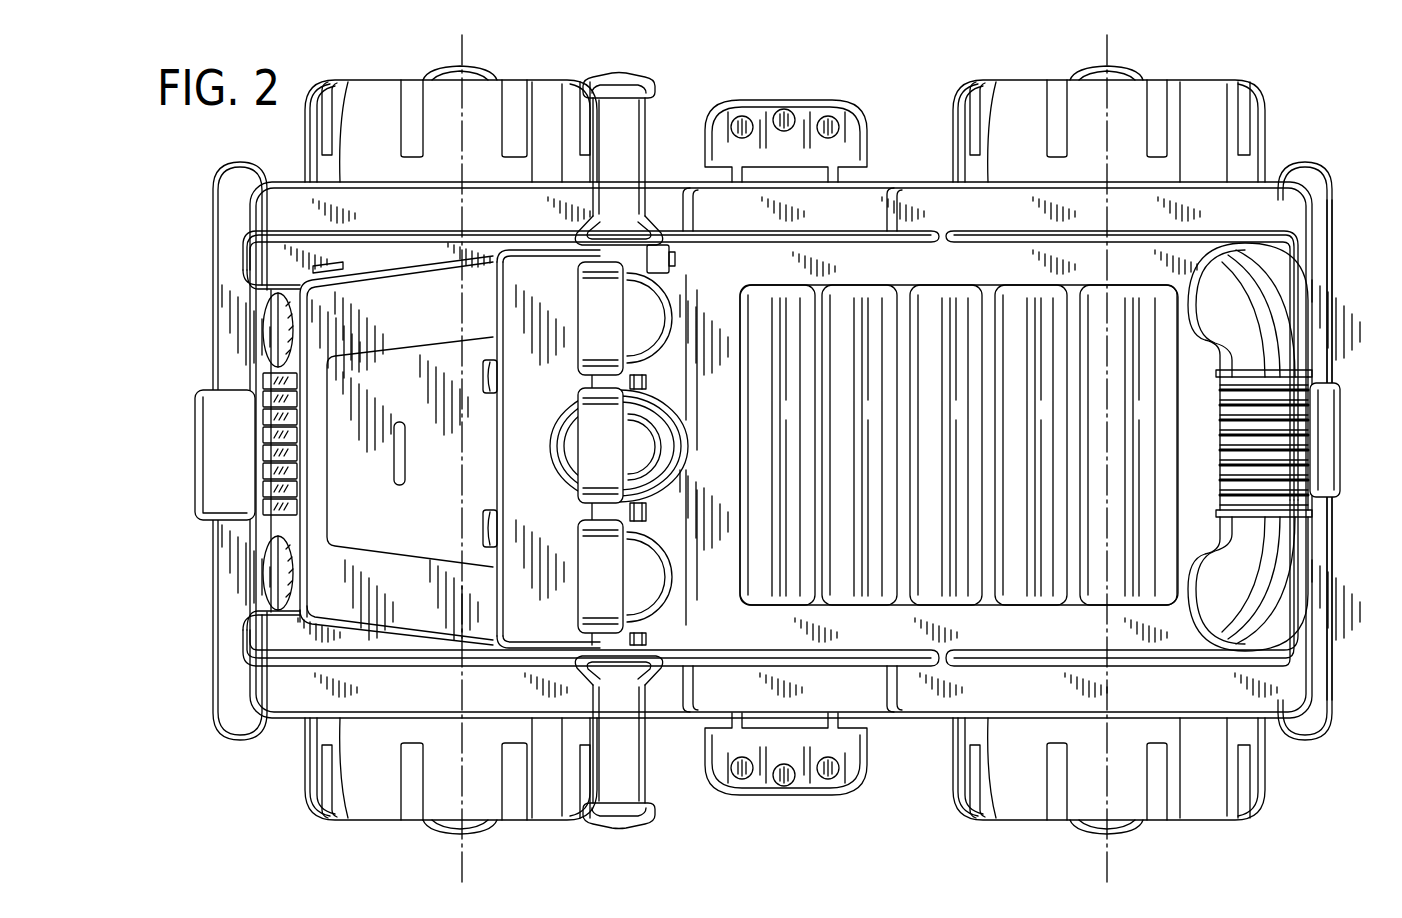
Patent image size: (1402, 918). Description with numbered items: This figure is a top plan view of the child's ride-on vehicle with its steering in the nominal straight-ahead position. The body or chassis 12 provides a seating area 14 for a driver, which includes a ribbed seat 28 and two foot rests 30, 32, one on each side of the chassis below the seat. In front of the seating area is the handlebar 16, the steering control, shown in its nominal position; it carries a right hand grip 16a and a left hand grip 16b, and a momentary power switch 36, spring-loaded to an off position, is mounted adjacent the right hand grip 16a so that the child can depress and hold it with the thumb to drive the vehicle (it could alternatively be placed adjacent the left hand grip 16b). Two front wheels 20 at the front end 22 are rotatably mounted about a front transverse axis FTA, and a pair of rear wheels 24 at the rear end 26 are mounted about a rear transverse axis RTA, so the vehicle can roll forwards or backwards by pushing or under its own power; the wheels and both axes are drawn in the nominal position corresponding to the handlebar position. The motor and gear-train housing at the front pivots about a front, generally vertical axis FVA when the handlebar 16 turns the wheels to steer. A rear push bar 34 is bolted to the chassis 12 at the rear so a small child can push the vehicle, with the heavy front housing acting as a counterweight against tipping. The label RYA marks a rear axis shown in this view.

The chassis 12 is at (937, 253).
The seating area 14 is at (959, 423).
The handlebar 16 is at (628, 383).
The right hand grip 16a is at (630, 118).
The left hand grip 16b is at (623, 780).
The front wheels 20 is at (370, 98).
The front end 22 is at (198, 221).
The rear wheels 24 is at (1225, 127).
The rear end 26 is at (1338, 236).
The ribbed seat 28 is at (882, 314).
The foot rest 30 is at (852, 125).
The foot rest 32 is at (837, 752).
The rear push bar 34 is at (1260, 322).
The momentary power switch 36 is at (674, 257).
The front transverse axis FTA is at (462, 452).
The front vertical axis FVA is at (635, 443).
The rear yaw axis RYA is at (1093, 443).
The rear transverse axis RTA is at (1107, 632).